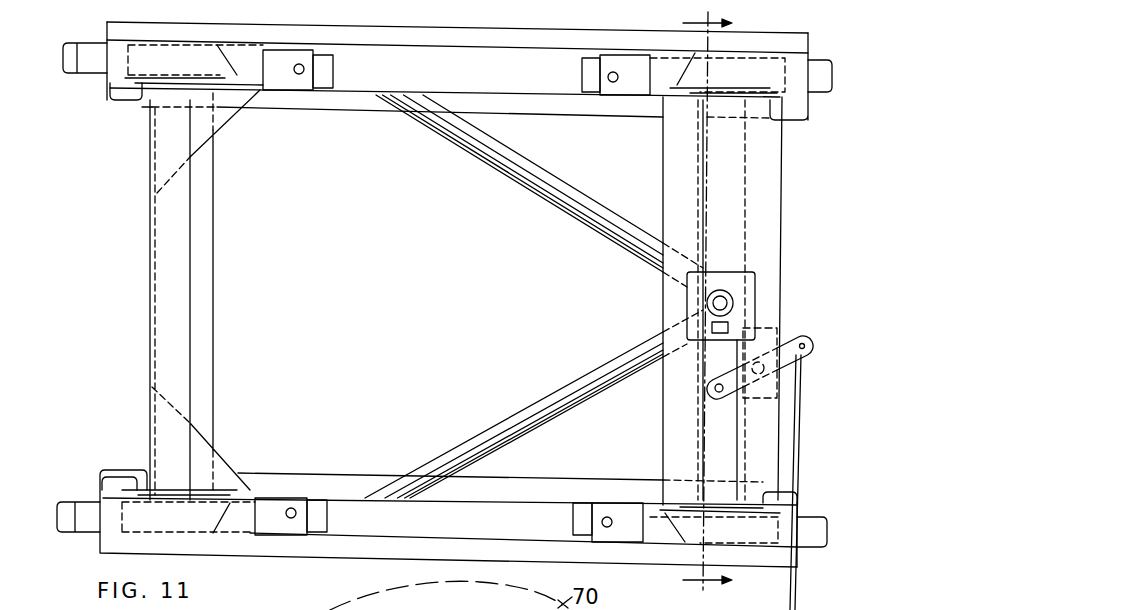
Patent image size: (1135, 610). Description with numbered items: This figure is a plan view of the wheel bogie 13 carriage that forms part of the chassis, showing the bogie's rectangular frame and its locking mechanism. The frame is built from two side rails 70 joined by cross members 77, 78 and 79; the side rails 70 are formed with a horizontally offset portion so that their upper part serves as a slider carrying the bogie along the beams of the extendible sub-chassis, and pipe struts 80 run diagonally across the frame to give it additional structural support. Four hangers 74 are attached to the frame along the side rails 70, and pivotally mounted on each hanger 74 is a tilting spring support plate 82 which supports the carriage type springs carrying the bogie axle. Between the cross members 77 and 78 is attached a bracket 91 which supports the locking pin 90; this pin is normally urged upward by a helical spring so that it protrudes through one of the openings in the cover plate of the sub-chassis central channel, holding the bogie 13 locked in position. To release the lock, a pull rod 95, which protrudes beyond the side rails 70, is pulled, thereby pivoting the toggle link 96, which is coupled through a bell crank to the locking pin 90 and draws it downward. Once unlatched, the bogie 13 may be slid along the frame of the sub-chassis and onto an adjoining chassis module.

The side rail 70 is at (423, 62).
The hanger 74 is at (283, 57).
The tilting spring support plate 82 is at (95, 50).
The cross member 79 is at (150, 330).
The cross member 77 is at (675, 168).
The cross member 78 is at (773, 222).
The pipe strut 80 is at (527, 185).
The locking pin 90 is at (687, 295).
The bracket 91 is at (755, 295).
The toggle link 96 is at (803, 338).
The pull rod 95 is at (800, 425).
The wheel bogie 13 is at (690, 304).